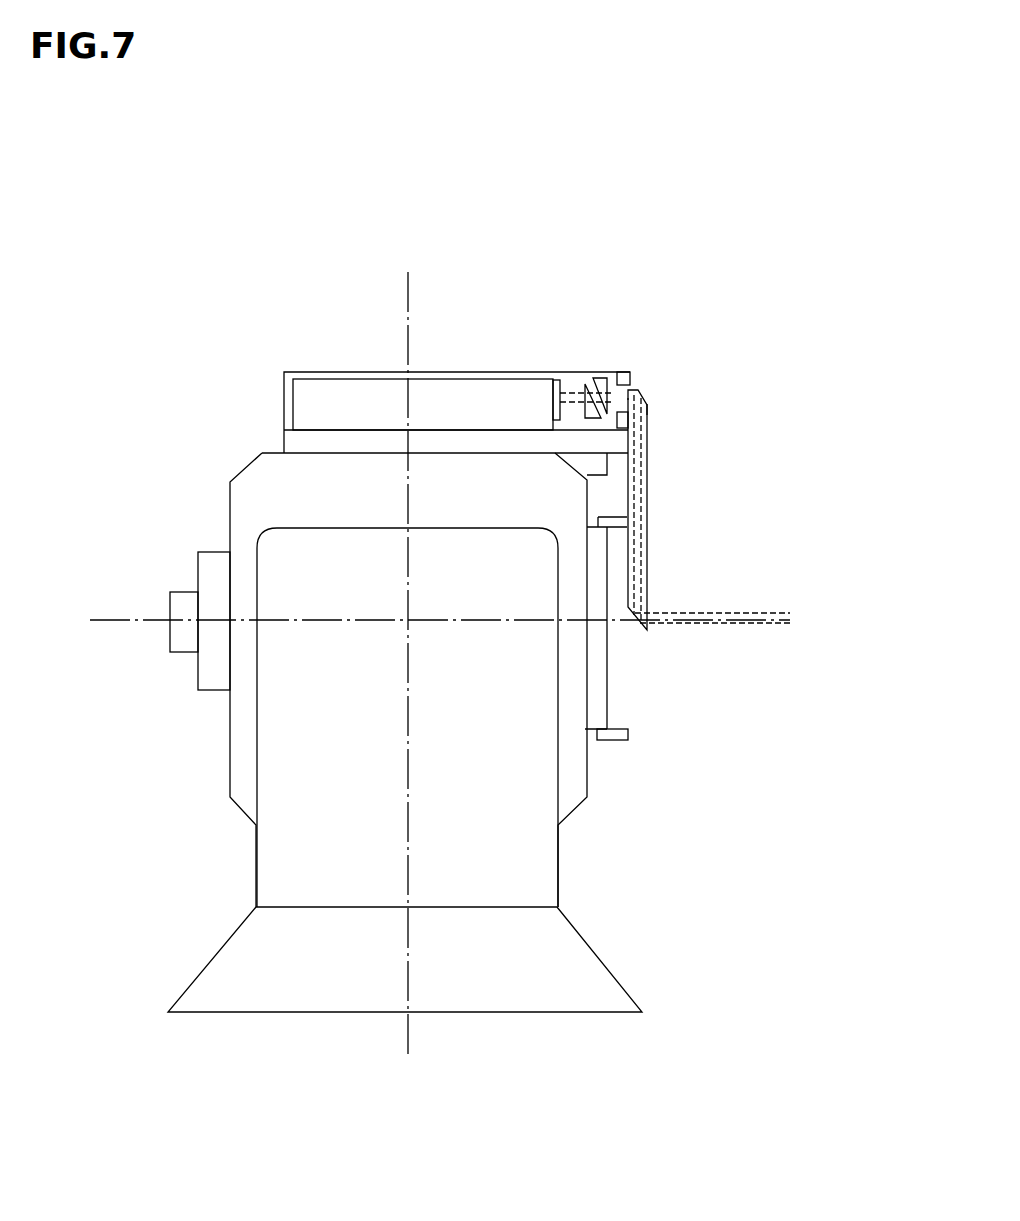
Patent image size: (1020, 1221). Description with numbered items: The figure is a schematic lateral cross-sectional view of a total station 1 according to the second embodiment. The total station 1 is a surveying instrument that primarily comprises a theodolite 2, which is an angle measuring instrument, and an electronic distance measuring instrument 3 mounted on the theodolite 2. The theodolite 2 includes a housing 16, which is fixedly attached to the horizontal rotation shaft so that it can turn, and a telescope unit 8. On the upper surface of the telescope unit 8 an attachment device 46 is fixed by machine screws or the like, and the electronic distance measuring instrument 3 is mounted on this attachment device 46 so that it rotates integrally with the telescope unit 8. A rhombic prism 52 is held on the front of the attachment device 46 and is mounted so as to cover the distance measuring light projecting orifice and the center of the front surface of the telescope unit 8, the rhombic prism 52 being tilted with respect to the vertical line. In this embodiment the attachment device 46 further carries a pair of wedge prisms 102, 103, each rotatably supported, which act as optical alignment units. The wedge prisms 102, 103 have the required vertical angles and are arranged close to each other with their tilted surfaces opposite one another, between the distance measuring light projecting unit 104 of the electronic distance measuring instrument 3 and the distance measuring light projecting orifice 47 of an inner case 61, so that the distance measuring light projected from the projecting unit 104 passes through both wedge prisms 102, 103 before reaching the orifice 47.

The total station 1 is at (178, 243).
The theodolite 2 is at (589, 805).
The electronic distance measuring instrument 3 is at (462, 378).
The telescope unit 8 is at (607, 700).
The housing 16 is at (256, 742).
The attachment device 46 is at (282, 352).
The distance measuring light projecting orifice 47 is at (640, 390).
The rhombic prism 52 is at (647, 557).
The inner case 61 is at (631, 371).
The wedge prism 102 is at (600, 380).
The wedge prism 103 is at (583, 410).
The distance measuring light projecting unit 104 is at (567, 380).